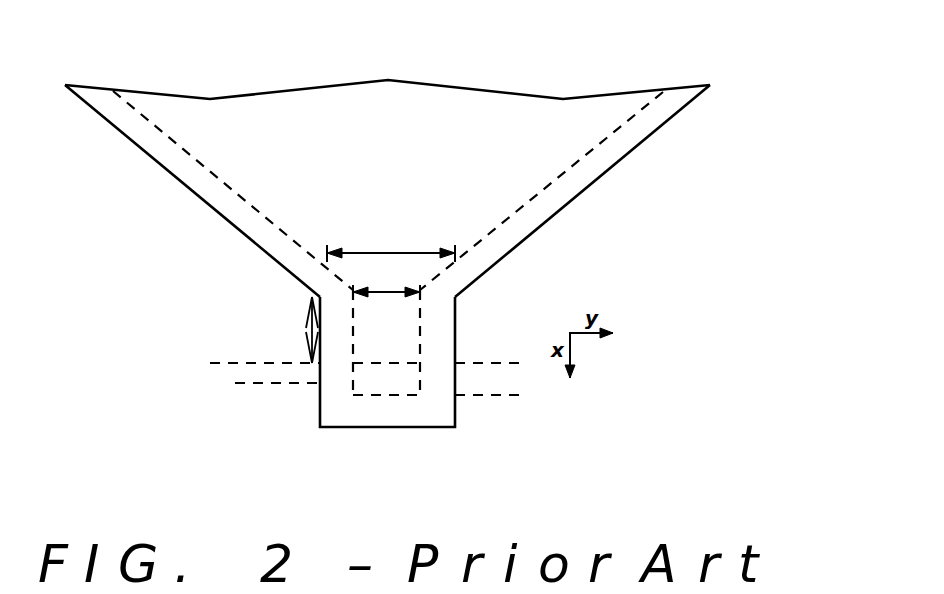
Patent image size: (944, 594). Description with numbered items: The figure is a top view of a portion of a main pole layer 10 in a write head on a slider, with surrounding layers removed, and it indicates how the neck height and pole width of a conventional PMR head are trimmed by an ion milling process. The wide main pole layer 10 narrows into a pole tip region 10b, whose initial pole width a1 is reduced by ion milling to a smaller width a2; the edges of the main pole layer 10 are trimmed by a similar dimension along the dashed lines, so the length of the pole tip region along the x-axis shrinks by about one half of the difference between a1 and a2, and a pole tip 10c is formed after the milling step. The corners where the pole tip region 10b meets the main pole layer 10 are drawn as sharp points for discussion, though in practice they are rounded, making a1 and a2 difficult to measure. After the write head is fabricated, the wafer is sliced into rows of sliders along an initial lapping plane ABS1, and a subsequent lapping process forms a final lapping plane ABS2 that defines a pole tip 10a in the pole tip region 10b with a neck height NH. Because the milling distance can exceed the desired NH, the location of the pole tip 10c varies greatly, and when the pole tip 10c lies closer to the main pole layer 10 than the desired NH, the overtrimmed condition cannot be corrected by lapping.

The main pole layer 10 is at (388, 107).
The pole tip 10a is at (373, 365).
The pole tip region 10b is at (405, 320).
The pole tip 10c is at (415, 395).
The initial lapping plane ABS1 is at (260, 388).
The final lapping plane ABS2 is at (192, 362).
The neck height NH is at (291, 330).
The initial pole width a1 is at (391, 245).
The pole width after ion milling a2 is at (386, 283).